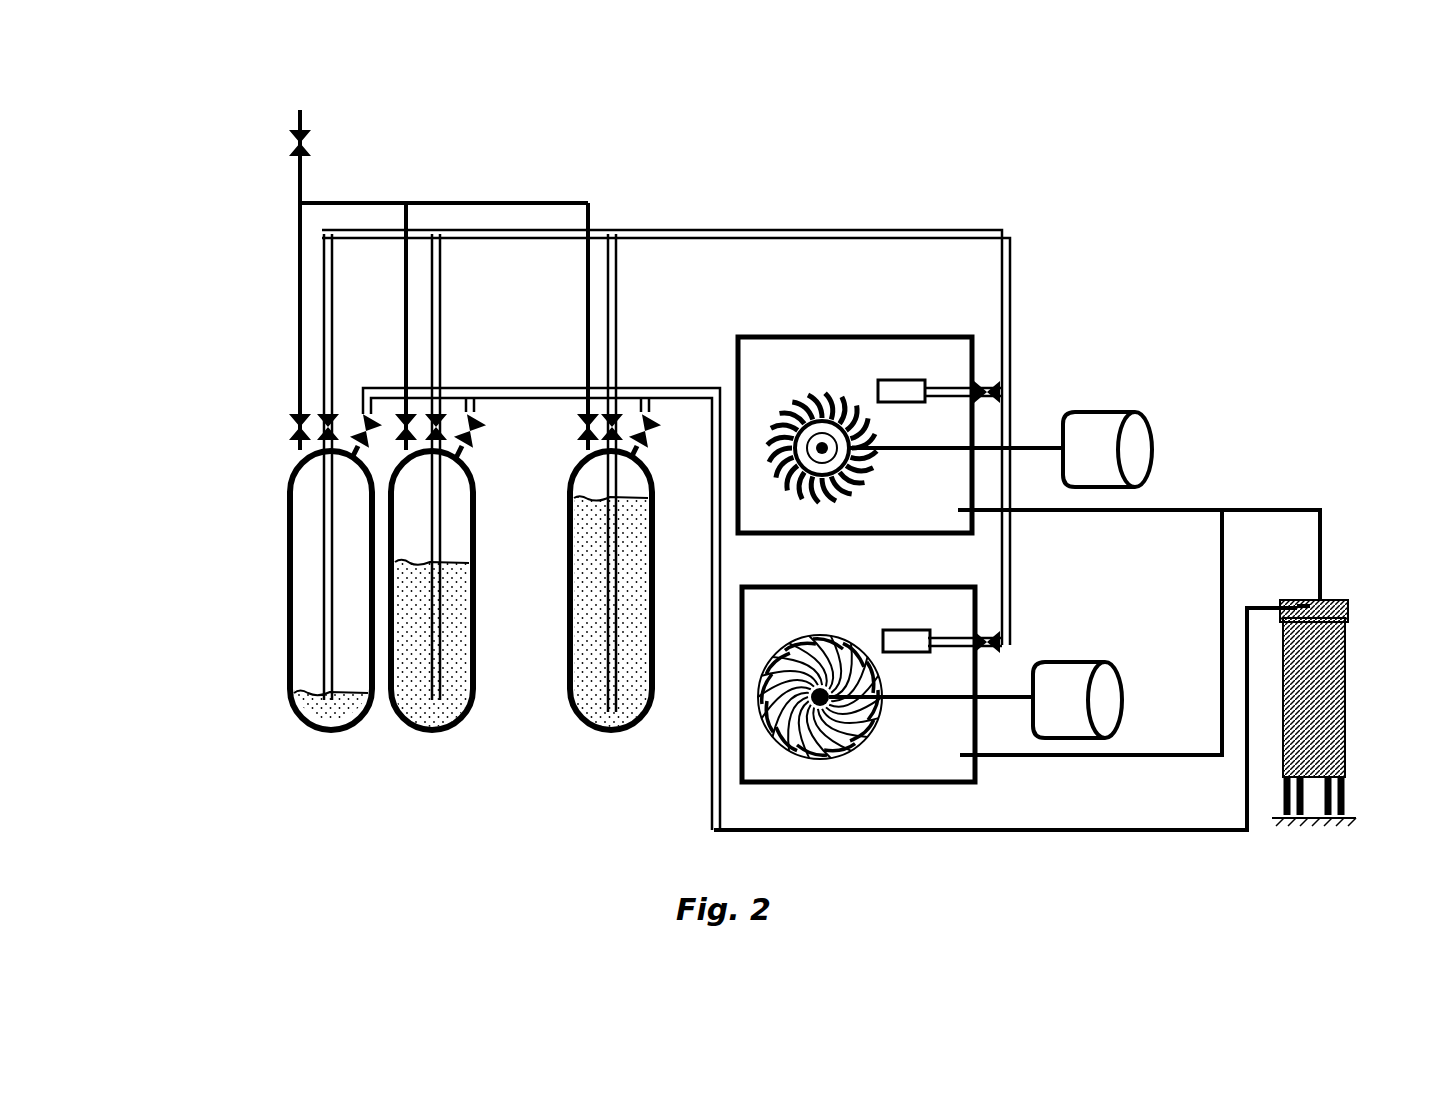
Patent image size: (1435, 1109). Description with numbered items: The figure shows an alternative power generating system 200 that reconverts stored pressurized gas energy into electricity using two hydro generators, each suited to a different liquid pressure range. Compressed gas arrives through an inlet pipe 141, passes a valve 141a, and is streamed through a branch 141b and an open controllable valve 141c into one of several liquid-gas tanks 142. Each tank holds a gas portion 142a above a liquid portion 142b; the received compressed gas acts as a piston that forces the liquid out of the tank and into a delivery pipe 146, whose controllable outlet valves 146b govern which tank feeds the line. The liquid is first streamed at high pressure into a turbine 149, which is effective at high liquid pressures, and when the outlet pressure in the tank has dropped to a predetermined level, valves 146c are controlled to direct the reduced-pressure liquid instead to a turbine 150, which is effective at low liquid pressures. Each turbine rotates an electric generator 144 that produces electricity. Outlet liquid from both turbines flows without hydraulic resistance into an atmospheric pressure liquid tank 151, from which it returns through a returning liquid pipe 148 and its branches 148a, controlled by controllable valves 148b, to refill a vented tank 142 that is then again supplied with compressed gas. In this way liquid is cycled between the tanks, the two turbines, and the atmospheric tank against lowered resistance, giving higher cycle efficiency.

The inlet pipe 141 is at (297, 109).
The supply valve 141a is at (297, 151).
The branch 141b is at (298, 245).
The controllable valve 141c is at (292, 431).
The liquid-gas tanks 142 is at (380, 633).
The gas portion 142a is at (300, 597).
The liquid portion 142b is at (292, 706).
The electric generator 144 is at (1150, 423).
The delivery pipe 146 is at (1015, 318).
The controllable outlet valves 146b is at (441, 418).
The valves 146c is at (992, 388).
The returning liquid pipe 148 is at (653, 405).
The branches 148a is at (470, 447).
The controllable valves 148b is at (366, 422).
The turbine 149 is at (866, 337).
The turbine 150 is at (903, 782).
The atmospheric pressure liquid tank 151 is at (1340, 697).
The power generating system 200 is at (1302, 165).